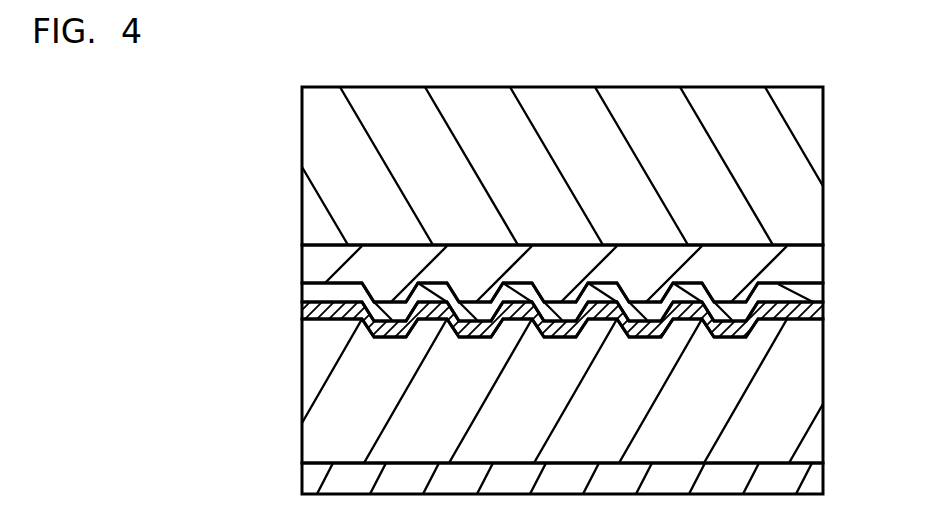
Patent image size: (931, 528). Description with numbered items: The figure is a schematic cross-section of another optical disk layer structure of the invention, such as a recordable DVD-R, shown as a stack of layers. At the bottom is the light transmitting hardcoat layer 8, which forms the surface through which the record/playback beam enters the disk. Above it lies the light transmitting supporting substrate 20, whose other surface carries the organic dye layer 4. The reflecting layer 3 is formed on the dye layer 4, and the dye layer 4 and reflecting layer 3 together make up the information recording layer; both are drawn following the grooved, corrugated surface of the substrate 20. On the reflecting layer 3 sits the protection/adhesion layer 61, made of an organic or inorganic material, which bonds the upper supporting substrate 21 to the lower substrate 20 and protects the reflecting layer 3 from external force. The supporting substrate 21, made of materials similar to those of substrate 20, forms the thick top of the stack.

The supporting substrate 21 is at (823, 163).
The protection/adhesion layer 61 is at (818, 268).
The reflecting layer 3 is at (823, 292).
The organic dye layer 4 is at (823, 312).
The light transmitting supporting substrate 20 is at (818, 438).
The light transmitting hardcoat layer 8 is at (818, 478).